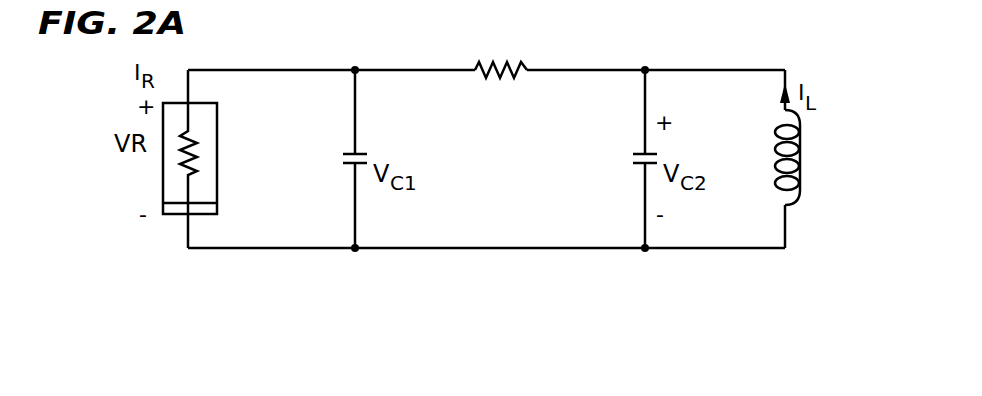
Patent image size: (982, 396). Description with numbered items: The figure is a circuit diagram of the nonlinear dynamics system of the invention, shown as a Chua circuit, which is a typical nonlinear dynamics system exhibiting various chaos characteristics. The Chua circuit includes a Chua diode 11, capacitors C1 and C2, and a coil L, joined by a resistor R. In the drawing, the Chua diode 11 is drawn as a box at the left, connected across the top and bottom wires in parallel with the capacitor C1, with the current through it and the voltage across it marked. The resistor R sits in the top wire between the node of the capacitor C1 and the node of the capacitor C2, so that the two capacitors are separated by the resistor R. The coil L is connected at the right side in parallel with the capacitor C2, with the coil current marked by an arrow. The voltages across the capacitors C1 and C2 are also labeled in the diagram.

The Chua diode 11 is at (177, 208).
The resistor R is at (501, 86).
The capacitor C1 is at (336, 146).
The capacitor C2 is at (624, 146).
The coil L is at (778, 157).